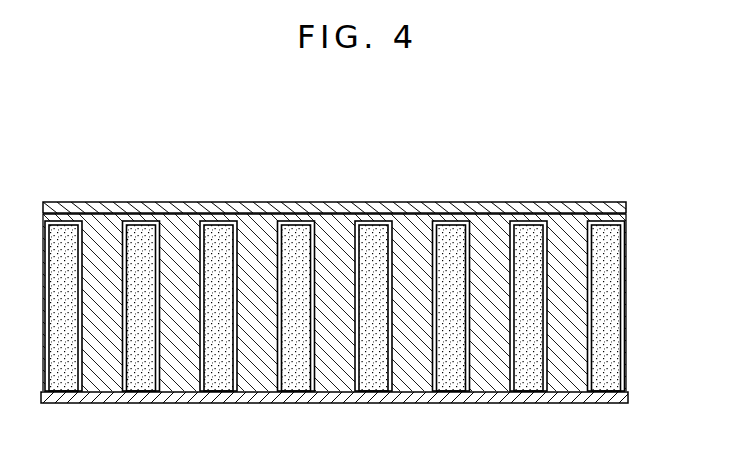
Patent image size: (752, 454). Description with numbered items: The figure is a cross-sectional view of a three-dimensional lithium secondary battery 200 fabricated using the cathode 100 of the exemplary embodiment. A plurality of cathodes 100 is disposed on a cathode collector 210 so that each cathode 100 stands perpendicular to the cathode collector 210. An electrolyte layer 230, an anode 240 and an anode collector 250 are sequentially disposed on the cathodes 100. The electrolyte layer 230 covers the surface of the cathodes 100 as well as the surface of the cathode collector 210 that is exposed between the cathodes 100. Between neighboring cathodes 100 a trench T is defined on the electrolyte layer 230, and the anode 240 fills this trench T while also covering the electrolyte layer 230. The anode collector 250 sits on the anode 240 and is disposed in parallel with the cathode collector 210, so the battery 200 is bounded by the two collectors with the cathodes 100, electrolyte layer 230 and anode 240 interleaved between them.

The three-dimensional lithium secondary battery 200 is at (631, 163).
The anode collector 250 is at (627, 208).
The anode 240 is at (584, 258).
The electrolyte layer 230 is at (566, 306).
The cathode 100 is at (617, 350).
The cathode collector 210 is at (629, 401).
The trench T is at (394, 276).